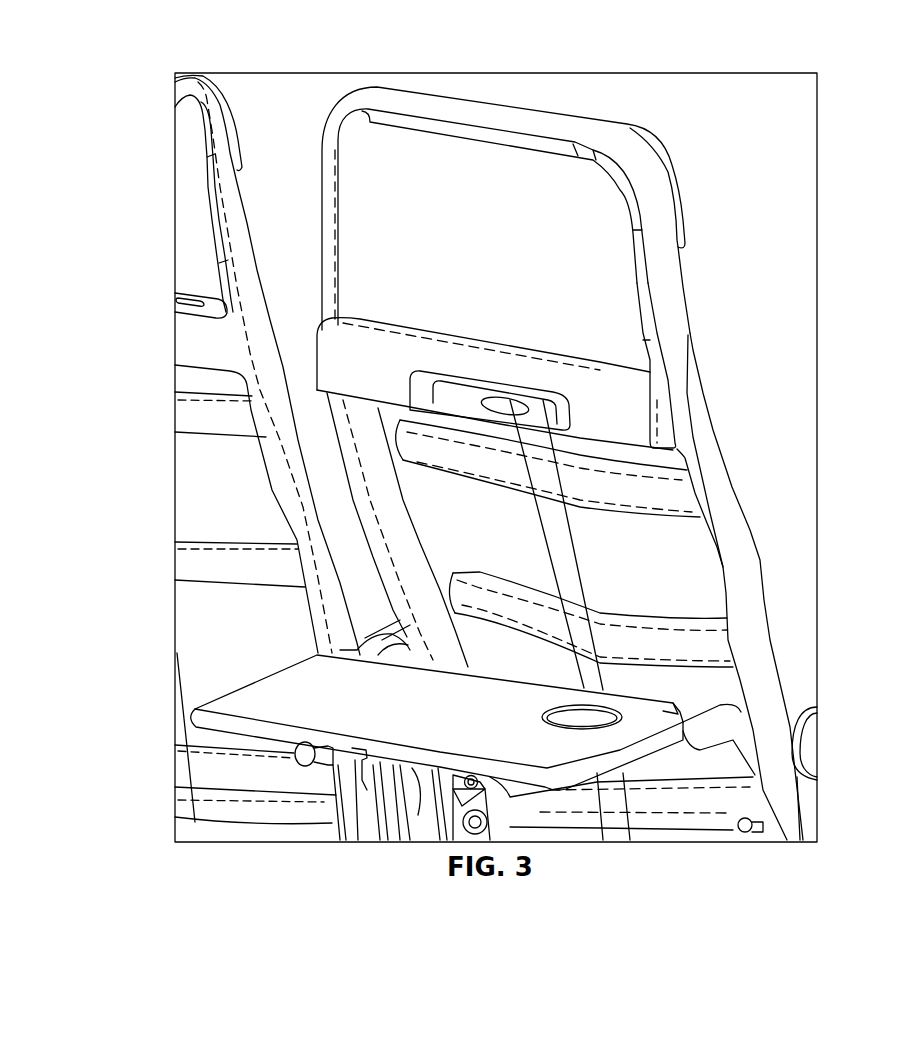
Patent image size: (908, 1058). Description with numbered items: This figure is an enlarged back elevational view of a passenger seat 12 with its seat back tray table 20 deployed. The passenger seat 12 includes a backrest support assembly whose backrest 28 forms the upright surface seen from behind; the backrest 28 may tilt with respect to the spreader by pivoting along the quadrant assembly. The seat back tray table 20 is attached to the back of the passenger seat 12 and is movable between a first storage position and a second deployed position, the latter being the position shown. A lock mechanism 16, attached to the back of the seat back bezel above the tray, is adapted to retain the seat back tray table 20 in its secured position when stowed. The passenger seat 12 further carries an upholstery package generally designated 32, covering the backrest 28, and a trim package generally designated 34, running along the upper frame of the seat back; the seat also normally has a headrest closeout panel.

The passenger seat 12 is at (697, 127).
The trim package 34 is at (672, 190).
The upholstery package 32 is at (677, 300).
The lock mechanism 16 is at (510, 407).
The backrest 28 is at (670, 567).
The seat back tray table 20 is at (253, 702).